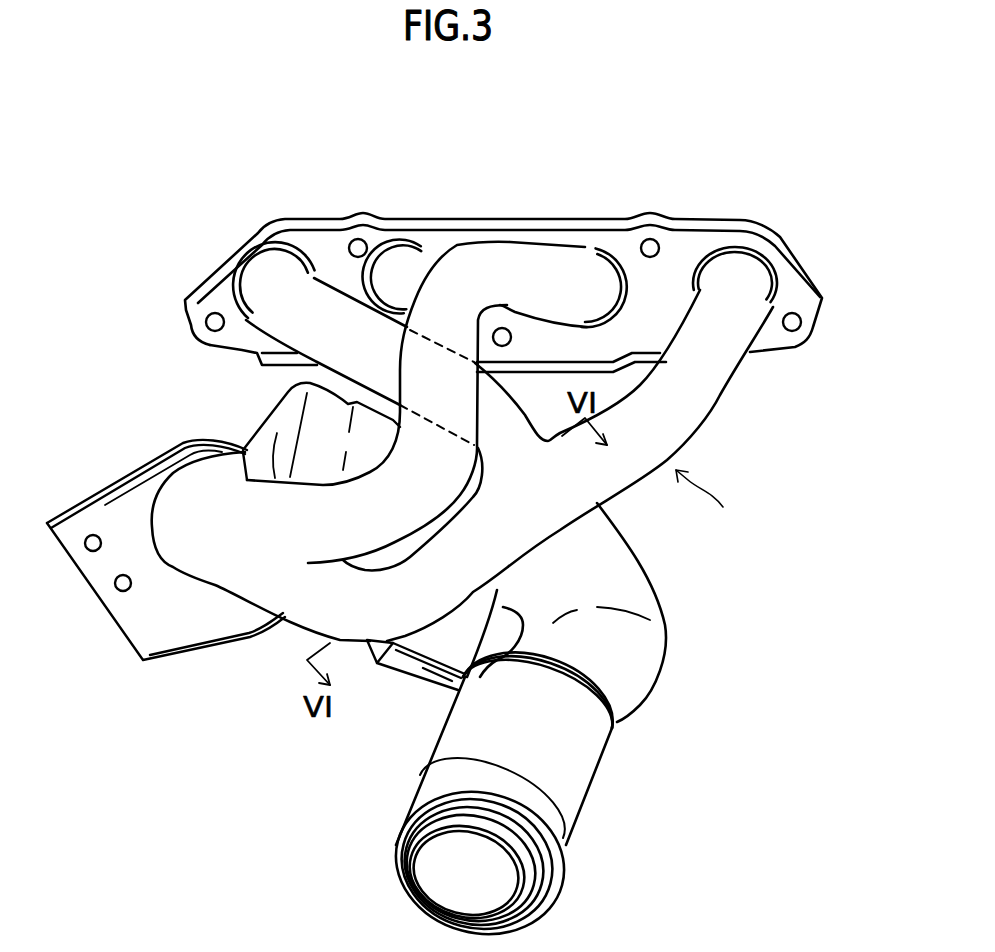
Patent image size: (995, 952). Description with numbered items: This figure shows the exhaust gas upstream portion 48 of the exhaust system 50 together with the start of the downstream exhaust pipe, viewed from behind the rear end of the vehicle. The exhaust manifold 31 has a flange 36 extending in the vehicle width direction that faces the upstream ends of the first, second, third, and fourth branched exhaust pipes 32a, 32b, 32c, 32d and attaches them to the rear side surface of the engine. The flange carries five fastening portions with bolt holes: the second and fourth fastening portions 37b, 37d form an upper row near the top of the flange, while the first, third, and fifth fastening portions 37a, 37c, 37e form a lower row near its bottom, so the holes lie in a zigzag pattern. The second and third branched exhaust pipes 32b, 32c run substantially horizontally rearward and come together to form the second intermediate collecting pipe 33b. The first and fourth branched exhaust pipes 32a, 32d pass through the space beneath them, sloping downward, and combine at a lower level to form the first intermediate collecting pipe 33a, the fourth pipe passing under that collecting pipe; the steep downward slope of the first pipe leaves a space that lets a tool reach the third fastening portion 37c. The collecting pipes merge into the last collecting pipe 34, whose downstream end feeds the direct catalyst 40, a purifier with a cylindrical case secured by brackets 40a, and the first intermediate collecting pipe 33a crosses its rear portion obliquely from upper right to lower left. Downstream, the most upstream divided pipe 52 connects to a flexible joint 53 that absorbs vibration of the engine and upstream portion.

The exhaust manifold 31 is at (715, 504).
The first branched exhaust pipe 32a is at (713, 363).
The second branched exhaust pipe 32b is at (577, 280).
The third branched exhaust pipe 32c is at (415, 273).
The fourth branched exhaust pipe 32d is at (270, 272).
The first intermediate collecting pipe 33a is at (337, 600).
The second intermediate collecting pipe 33b is at (392, 513).
The last collecting pipe 34 is at (173, 523).
The flange 36 is at (320, 243).
The first fastening portion 37a is at (792, 313).
The second fastening portion 37b is at (650, 239).
The third fastening portion 37c is at (504, 328).
The fourth fastening portion 37d is at (356, 239).
The fifth fastening portion 37e is at (213, 313).
The direct catalyst 40 is at (272, 410).
The brackets 40a is at (103, 490).
The exhaust gas upstream portion 48 is at (295, 638).
The exhaust system 50 is at (590, 727).
The most upstream divided pipe 52 is at (653, 657).
The flexible joint 53 is at (577, 792).